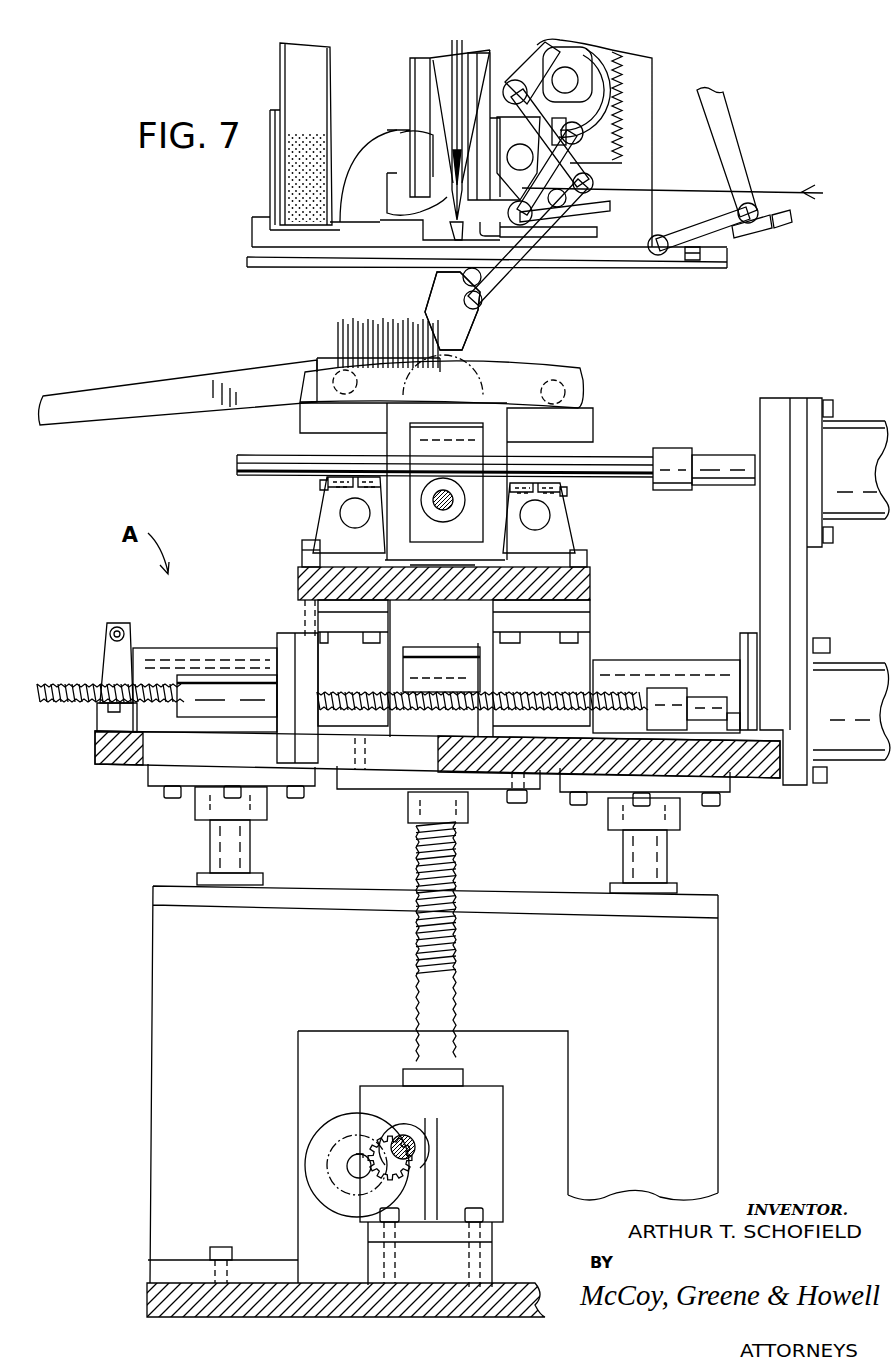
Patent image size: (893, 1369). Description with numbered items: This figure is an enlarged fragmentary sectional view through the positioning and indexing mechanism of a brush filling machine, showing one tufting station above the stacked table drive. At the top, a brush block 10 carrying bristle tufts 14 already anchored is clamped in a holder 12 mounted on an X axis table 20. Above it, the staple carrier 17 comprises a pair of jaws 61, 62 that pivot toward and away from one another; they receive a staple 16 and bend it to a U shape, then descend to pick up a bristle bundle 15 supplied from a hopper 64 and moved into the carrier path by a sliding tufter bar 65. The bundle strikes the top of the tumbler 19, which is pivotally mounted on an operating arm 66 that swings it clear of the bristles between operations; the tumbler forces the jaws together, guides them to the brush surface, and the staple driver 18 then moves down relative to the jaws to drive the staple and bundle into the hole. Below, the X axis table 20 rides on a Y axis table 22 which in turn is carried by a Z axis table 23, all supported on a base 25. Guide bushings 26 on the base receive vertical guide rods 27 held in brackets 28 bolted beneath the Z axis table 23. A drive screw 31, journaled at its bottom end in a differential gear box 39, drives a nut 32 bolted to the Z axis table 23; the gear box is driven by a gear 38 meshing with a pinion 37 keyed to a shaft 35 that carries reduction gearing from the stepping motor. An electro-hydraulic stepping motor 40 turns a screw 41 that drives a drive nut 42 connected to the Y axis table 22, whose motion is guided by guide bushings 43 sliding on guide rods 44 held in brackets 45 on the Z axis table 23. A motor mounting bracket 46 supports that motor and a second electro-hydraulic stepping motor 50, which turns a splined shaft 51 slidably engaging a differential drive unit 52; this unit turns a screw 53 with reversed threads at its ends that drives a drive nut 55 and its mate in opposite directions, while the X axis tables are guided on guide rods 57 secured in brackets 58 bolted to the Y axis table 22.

The brush block 10 is at (163, 393).
The holder 12 is at (572, 367).
The bristle tufts 14 is at (337, 342).
The bristle bundle 15 is at (452, 240).
The staple 16 is at (412, 205).
The staple carrier 17 is at (390, 132).
The staple driver 18 is at (462, 64).
The tumbler 19 is at (430, 290).
The X axis table 20 is at (594, 420).
The Y axis table 22 is at (590, 585).
The Z axis table 23 is at (765, 779).
The base 25 is at (150, 1286).
The guide bushings 26 is at (200, 877).
The vertical guide rods 27 is at (252, 850).
The brackets 28 is at (200, 805).
The drive screw 31 is at (458, 943).
The nut 32 is at (467, 812).
The shaft 35 is at (407, 1135).
The pinion 37 is at (403, 1126).
The gear 38 is at (367, 1142).
The differential gear box 39 is at (485, 1148).
The electro-hydraulic stepping motor 40 is at (860, 762).
The screw 41 is at (170, 683).
The drive nut 42 is at (222, 683).
The guide bushings 43 is at (403, 660).
The guide rods 44 is at (710, 668).
The brackets 45 is at (112, 622).
The motor mounting bracket 46 is at (803, 592).
The electro-hydraulic stepping motor 50 is at (866, 437).
The splined shaft 51 is at (627, 462).
The differential drive unit 52 is at (483, 443).
The screw 53 is at (434, 508).
The drive nut 55 is at (456, 516).
The guide rods 57 is at (346, 514).
The brackets 58 is at (338, 498).
The jaw 61 is at (437, 98).
The jaw 62 is at (472, 93).
The hopper 64 is at (281, 82).
The tufter bar 65 is at (345, 226).
The operating arm 66 is at (501, 276).